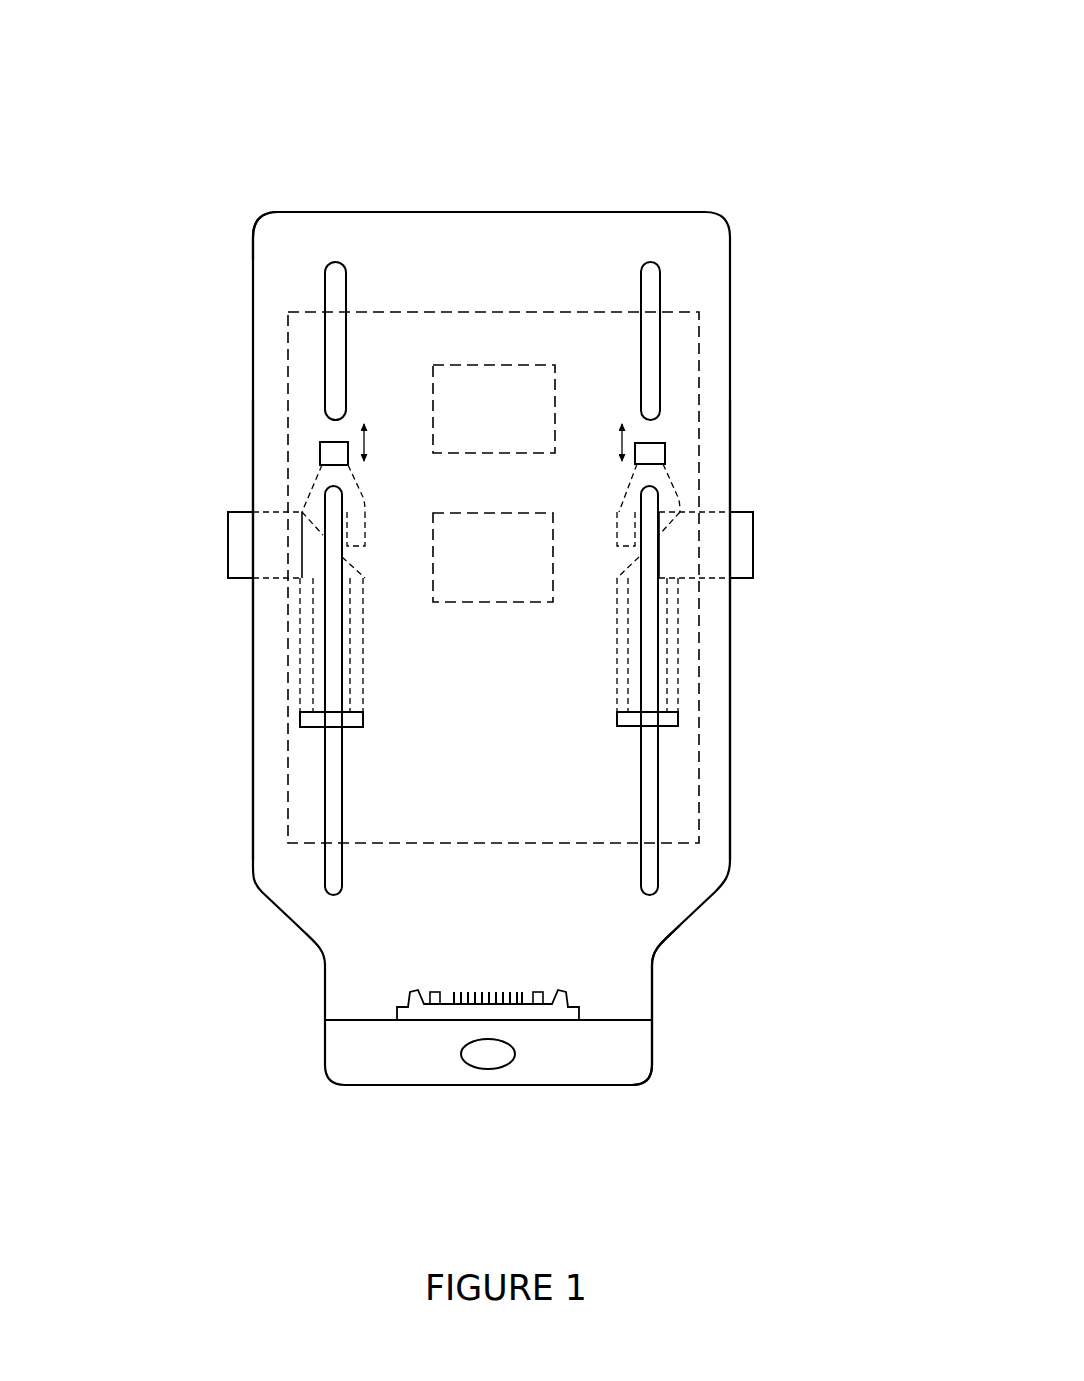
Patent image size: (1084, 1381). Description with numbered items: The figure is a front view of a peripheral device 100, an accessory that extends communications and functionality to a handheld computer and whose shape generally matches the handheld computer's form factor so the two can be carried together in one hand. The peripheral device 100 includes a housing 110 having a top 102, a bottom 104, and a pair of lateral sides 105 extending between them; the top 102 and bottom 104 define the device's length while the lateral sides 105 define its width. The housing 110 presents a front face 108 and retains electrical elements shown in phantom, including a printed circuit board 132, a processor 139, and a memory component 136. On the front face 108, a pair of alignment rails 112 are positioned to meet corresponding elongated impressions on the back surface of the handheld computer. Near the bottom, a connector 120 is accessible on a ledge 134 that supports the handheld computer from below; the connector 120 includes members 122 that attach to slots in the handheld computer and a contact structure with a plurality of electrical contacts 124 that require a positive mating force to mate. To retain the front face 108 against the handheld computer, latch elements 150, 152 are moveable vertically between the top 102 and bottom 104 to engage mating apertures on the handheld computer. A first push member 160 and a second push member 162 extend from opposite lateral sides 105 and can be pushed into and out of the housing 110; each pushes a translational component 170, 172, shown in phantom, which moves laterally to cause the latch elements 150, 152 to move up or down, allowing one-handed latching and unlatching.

The peripheral device 100 is at (493, 579).
The top 102 is at (480, 212).
The bottom 104 is at (541, 1075).
The lateral sides 105 is at (248, 806).
The front face 108 is at (540, 248).
The housing 110 is at (318, 212).
The alignment rails 112 is at (340, 790).
The connector 120 is at (369, 946).
The members 122 is at (410, 990).
The electrical contacts 124 is at (522, 983).
The printed circuit board 132 is at (578, 818).
The ledge 134 is at (597, 1018).
The memory component 136 is at (489, 585).
The processor 139 is at (507, 390).
The latch element 150 is at (327, 452).
The latch element 152 is at (650, 454).
The first push member 160 is at (228, 548).
The second push member 162 is at (718, 548).
The translational component 170 is at (342, 488).
The translational component 172 is at (648, 491).